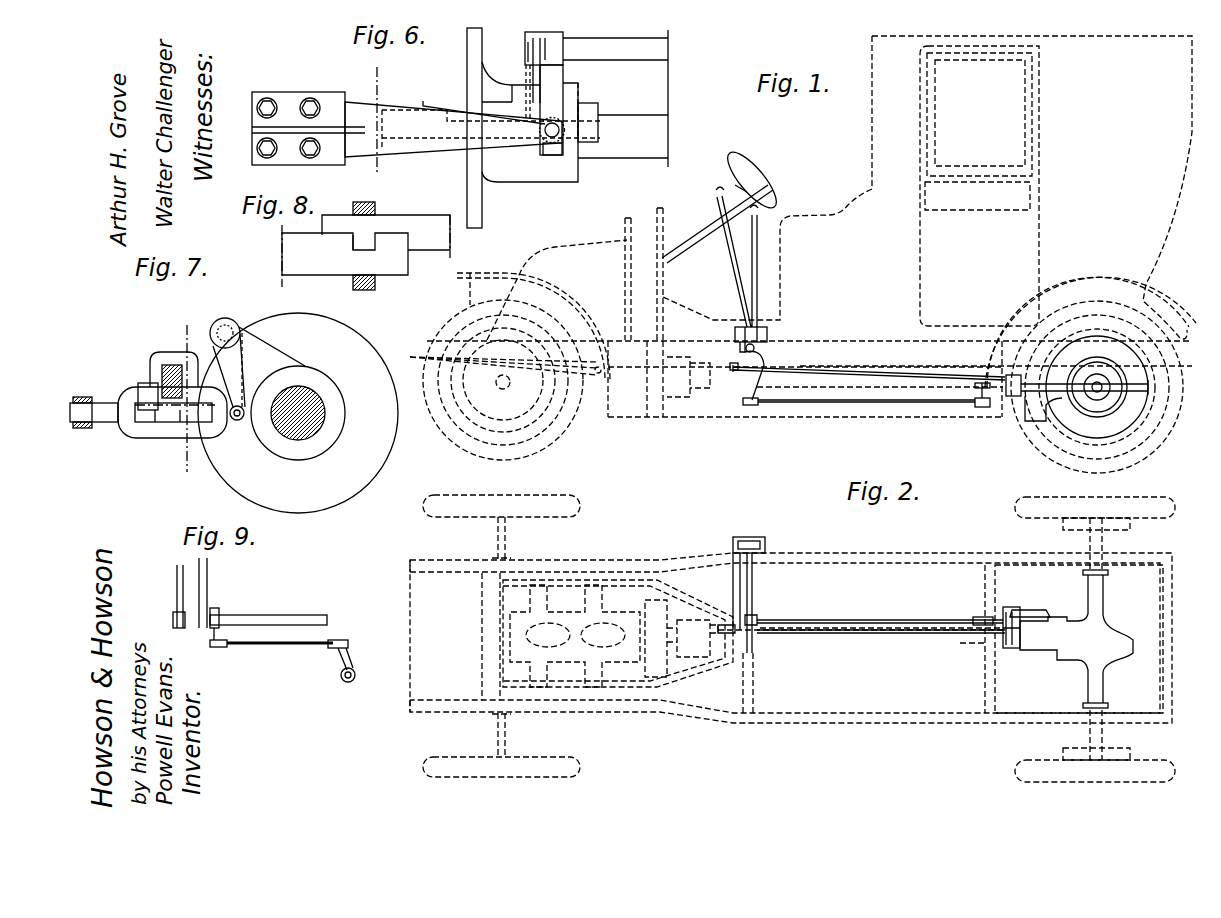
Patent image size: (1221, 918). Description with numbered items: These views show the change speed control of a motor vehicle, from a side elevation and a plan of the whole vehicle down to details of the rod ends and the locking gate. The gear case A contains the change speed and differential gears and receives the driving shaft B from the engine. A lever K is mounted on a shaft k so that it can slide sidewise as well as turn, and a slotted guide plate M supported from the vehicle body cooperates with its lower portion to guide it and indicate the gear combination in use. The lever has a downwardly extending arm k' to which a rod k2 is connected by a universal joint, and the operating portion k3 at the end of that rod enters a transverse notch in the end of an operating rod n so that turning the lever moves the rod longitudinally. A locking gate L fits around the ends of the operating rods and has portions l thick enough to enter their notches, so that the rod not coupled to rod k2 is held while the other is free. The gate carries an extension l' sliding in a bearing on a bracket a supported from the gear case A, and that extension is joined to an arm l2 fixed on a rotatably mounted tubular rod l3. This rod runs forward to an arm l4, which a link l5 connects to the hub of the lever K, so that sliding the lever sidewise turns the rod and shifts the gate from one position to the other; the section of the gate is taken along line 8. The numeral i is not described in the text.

In FIG. 6, the gear case A is at (524, 171).
In FIG. 7, the gear case A is at (308, 512).
In FIG. 1, the gear case A is at (1026, 408).
In FIG. 2, the gear case A is at (1076, 639).
In FIG. 7, the driving shaft B is at (325, 424).
In FIG. 9, the lever K is at (207, 600).
In FIG. 1, the lever K is at (745, 257).
In FIG. 1, the slotted guide plate M is at (768, 329).
In FIG. 2, the slotted guide plate M is at (768, 540).
In FIG. 6, the locking gate L is at (558, 85).
In FIG. 8, the locking gate L is at (375, 202).
In FIG. 7, the locking gate L is at (226, 437).
In FIG. 2, the locking gate L is at (978, 617).
In FIG. 6, the bracket a is at (437, 143).
In FIG. 7, the bracket a is at (88, 403).
In FIG. 2, the bracket a is at (1038, 610).
In FIG. 6, the operating rod n is at (480, 102).
In FIG. 8, the operating rod n is at (396, 225).
In FIG. 7, the operating rod n is at (155, 436).
In FIG. 7, the slide block i is at (150, 382).
In FIG. 7, the gate portions l is at (172, 412).
In FIG. 7, the gate extension l' is at (106, 429).
In FIG. 6, the arm l2 is at (530, 64).
In FIG. 7, the arm l2 is at (201, 370).
In FIG. 6, the rotatably mounted rod l3 is at (628, 41).
In FIG. 9, the rotatably mounted rod l3 is at (354, 682).
In FIG. 1, the rotatably mounted rod l3 is at (865, 370).
In FIG. 2, the rotatably mounted rod l3 is at (850, 633).
In FIG. 9, the arm l4 is at (350, 648).
In FIG. 9, the link l5 is at (292, 646).
In FIG. 2, the link l5 is at (733, 590).
In FIG. 9, the shaft k is at (268, 611).
In FIG. 1, the shaft k is at (738, 371).
In FIG. 2, the shaft k is at (758, 633).
In FIG. 1, the downwardly extending arm k' is at (742, 396).
In FIG. 6, the rod k2 is at (667, 106).
In FIG. 8, the rod k2 is at (304, 270).
In FIG. 7, the rod k2 is at (170, 365).
In FIG. 1, the rod k2 is at (912, 400).
In FIG. 2, the rod k2 is at (880, 612).
In FIG. 8, the operating portion k3 is at (392, 270).
In FIG. 7, the section line 8 is at (190, 400).